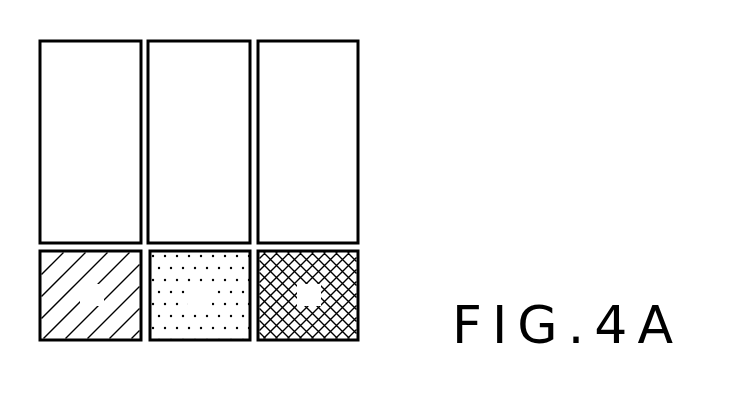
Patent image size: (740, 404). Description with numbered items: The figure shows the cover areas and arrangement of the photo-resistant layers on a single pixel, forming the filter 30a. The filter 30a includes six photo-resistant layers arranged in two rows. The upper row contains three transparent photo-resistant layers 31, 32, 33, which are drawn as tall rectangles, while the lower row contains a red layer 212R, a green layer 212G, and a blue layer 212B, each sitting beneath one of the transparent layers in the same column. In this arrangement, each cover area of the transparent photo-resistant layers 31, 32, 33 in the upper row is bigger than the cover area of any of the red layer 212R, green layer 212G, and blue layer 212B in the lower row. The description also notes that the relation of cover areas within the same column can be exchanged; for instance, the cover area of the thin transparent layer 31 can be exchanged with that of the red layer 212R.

The transparent photo-resistant layer 31 is at (75, 41).
The transparent photo-resistant layer 32 is at (181, 41).
The transparent photo-resistant layer 33 is at (292, 41).
The red layer 212R is at (83, 341).
The green layer 212G is at (193, 341).
The blue layer 212B is at (300, 341).
The filter 30a is at (408, 76).